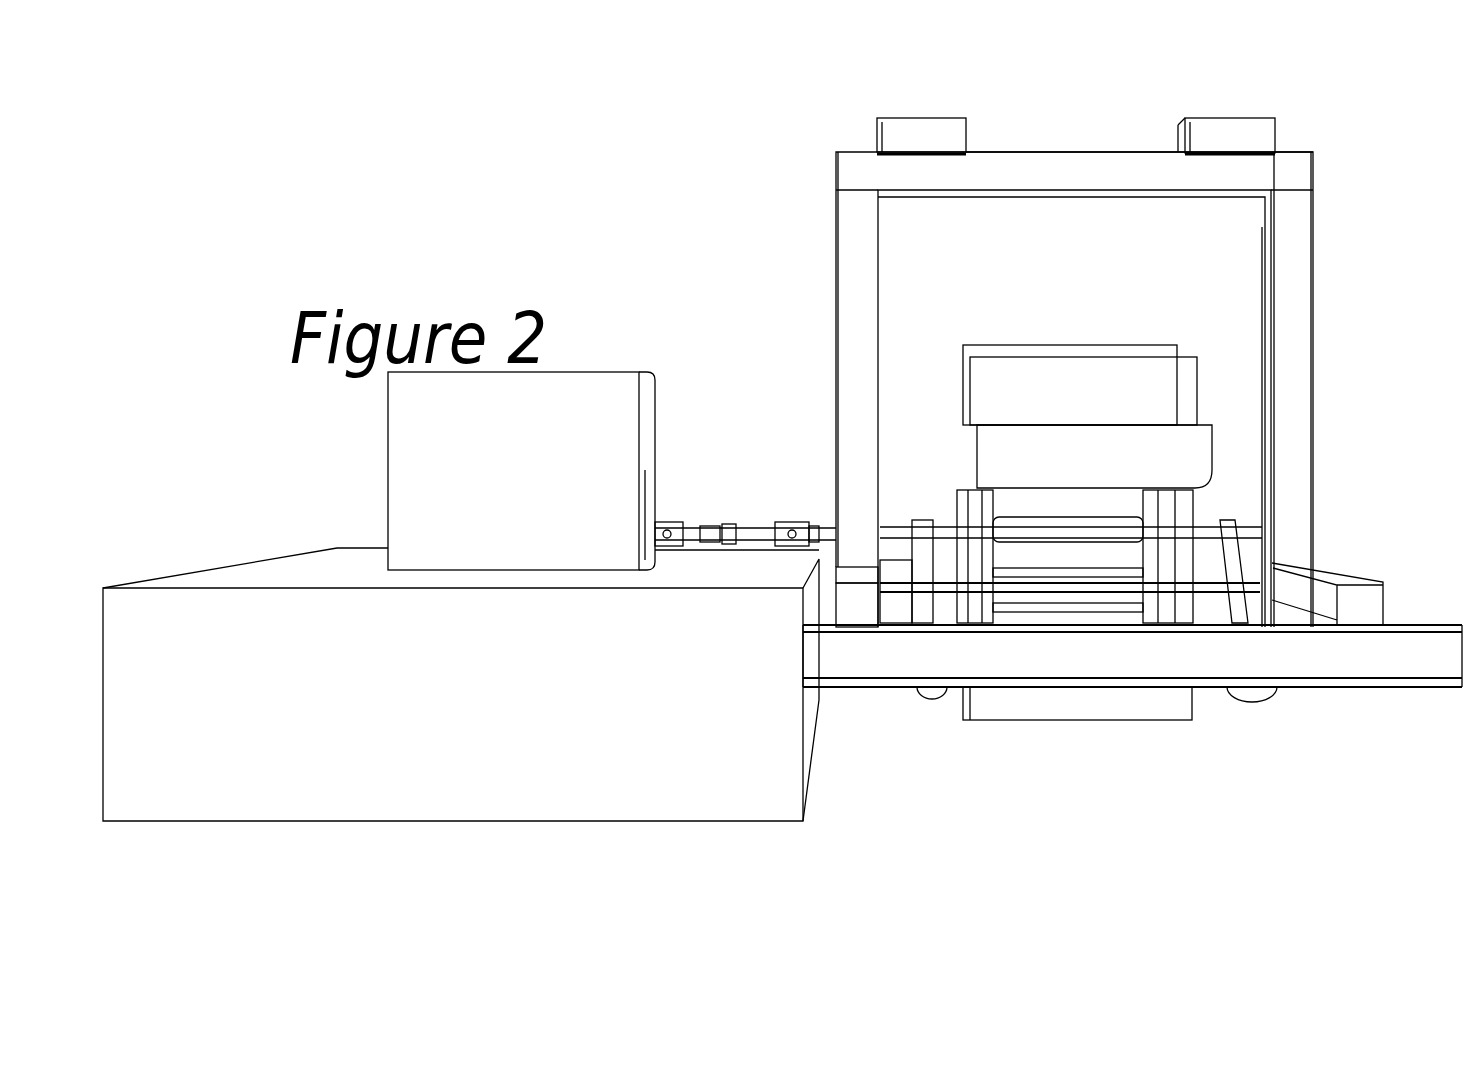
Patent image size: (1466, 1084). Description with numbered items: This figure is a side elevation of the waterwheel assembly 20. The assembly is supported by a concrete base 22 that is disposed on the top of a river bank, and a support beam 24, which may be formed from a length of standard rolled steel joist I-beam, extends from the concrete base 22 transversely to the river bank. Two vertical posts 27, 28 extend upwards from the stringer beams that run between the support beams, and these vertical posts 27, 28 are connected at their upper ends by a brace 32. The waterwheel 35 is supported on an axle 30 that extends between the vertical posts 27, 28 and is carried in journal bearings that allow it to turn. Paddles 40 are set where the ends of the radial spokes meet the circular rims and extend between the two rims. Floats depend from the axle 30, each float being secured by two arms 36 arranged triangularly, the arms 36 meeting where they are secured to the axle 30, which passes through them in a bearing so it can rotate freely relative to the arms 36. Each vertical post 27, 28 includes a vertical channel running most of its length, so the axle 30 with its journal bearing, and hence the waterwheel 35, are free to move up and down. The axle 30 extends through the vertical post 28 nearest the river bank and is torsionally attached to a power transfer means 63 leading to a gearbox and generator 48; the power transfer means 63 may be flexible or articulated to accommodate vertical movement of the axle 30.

The waterwheel assembly 20 is at (828, 327).
The concrete base 22 is at (430, 706).
The support beam 24 is at (967, 660).
The vertical post 27 is at (1283, 410).
The vertical post 28 is at (845, 438).
The axle 30 is at (1248, 523).
The brace 32 is at (1090, 208).
The waterwheel 35 is at (1195, 325).
The arm 36 is at (1230, 580).
The paddle 40 is at (1033, 357).
The gearbox and generator 48 is at (477, 479).
The power transfer means 63 is at (743, 550).